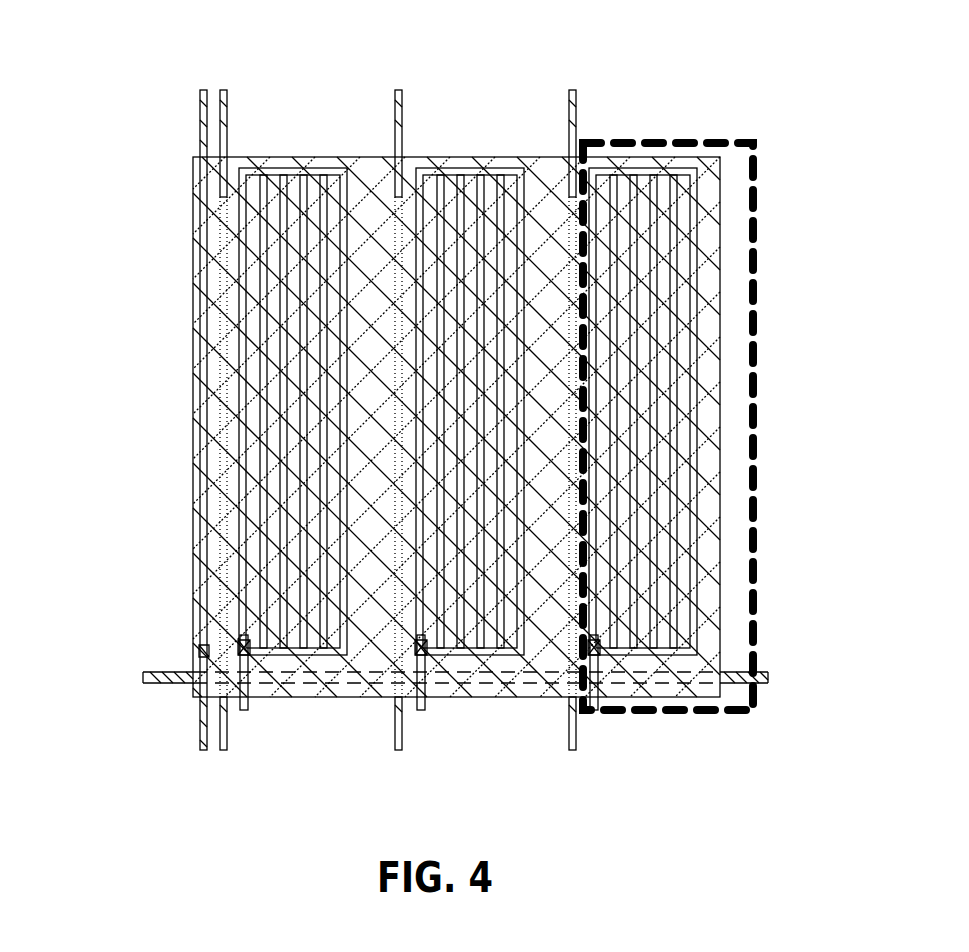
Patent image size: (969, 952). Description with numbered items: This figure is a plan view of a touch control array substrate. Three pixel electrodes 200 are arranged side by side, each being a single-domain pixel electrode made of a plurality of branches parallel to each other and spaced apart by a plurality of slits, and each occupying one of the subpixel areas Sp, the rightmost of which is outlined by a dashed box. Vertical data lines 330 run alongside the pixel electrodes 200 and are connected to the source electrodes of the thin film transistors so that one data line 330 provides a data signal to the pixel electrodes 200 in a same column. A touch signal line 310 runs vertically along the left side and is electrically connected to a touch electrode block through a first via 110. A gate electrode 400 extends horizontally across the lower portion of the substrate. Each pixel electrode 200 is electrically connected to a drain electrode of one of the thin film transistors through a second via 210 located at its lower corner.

The first via 110 is at (195, 652).
The pixel electrode 200 is at (440, 167).
The second via 210 is at (255, 660).
The touch signal line 310 is at (200, 135).
The data line 330 is at (398, 90).
The gate electrode 400 is at (145, 677).
The subpixel area Sp is at (756, 208).